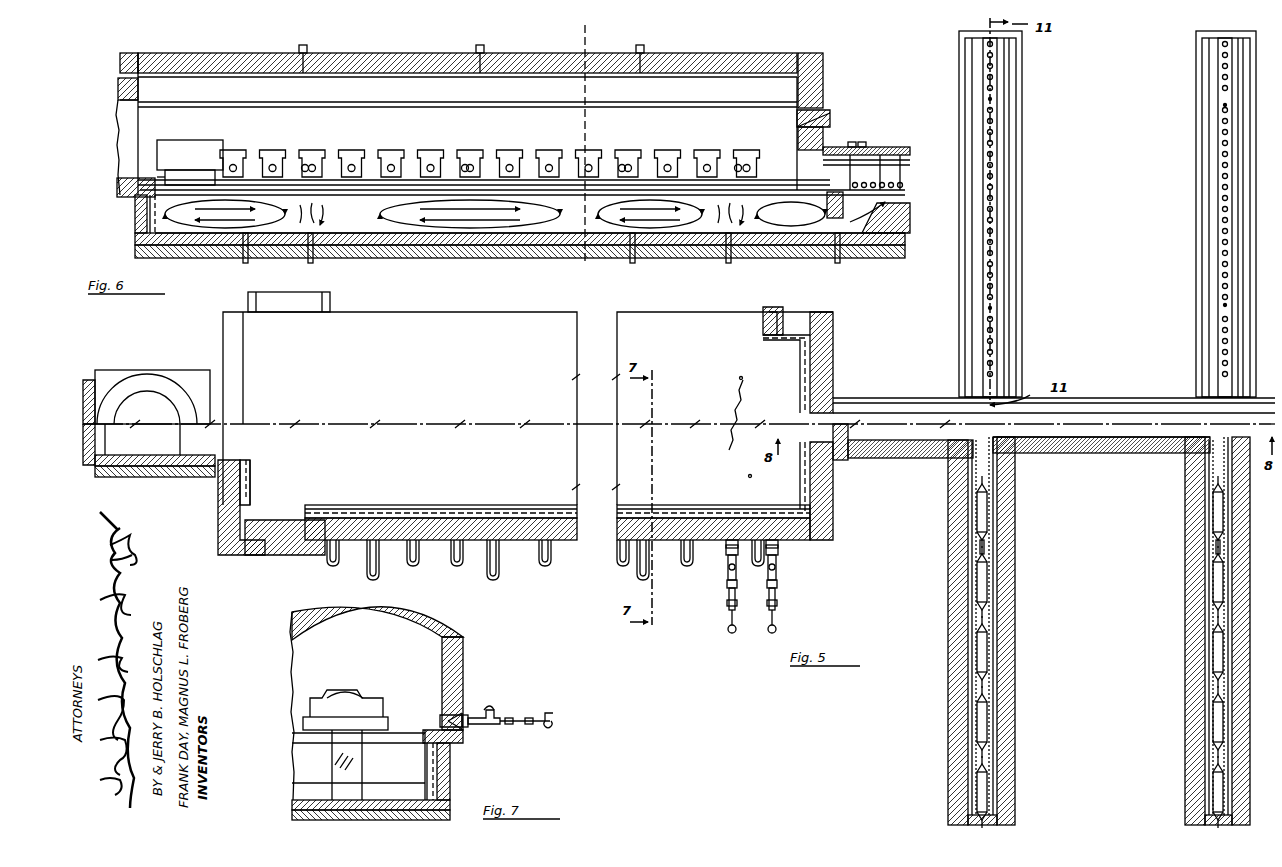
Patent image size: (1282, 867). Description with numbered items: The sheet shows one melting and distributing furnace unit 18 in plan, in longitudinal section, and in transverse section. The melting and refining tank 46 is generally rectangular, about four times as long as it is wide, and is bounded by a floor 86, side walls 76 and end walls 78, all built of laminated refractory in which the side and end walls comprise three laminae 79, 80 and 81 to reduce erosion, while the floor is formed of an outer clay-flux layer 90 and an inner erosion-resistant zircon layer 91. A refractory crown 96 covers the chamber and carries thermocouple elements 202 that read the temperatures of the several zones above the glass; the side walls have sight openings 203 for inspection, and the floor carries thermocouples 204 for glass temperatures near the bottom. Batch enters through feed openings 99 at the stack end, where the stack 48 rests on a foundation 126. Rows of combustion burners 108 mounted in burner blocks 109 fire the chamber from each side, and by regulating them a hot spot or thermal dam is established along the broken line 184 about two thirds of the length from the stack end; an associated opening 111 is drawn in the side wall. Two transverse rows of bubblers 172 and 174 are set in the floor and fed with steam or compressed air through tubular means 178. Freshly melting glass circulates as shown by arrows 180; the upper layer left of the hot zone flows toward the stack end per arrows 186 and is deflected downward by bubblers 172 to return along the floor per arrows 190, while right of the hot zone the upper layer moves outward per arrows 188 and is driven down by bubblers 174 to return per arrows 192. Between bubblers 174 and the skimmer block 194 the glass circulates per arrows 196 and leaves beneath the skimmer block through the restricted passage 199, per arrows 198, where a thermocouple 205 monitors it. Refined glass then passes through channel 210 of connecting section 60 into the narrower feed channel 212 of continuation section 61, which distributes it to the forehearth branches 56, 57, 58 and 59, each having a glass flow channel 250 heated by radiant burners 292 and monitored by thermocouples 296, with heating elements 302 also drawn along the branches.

In FIG. 6, the furnace unit 18 is at (444, 50).
In FIG. 6, the melting and refining tank 46 is at (526, 130).
In FIG. 5, the melting and refining tank 46 is at (526, 448).
In FIG. 7, the melting and refining tank 46 is at (393, 675).
In FIG. 5, the stack 48 is at (137, 387).
In FIG. 5, the forehearth section 56 is at (948, 796).
In FIG. 5, the forehearth section 57 is at (959, 54).
In FIG. 5, the forehearth section 58 is at (1185, 786).
In FIG. 5, the forehearth section 59 is at (1196, 46).
In FIG. 5, the forehearth connecting section 60 is at (907, 396).
In FIG. 5, the forehearth continuation section 61 is at (1107, 450).
In FIG. 5, the side wall 76 is at (346, 500).
In FIG. 7, the side wall 76 is at (455, 769).
In FIG. 6, the end wall 78 is at (124, 226).
In FIG. 5, the end wall 78 is at (214, 503).
In FIG. 6, the wall layer 79 is at (150, 198).
In FIG. 5, the wall layer 79 is at (253, 458).
In FIG. 7, the wall layer 79 is at (427, 757).
In FIG. 6, the wall layer 80 is at (153, 210).
In FIG. 5, the wall layer 80 is at (246, 458).
In FIG. 7, the wall layer 80 is at (441, 751).
In FIG. 6, the wall layer 81 is at (136, 234).
In FIG. 5, the wall layer 81 is at (220, 490).
In FIG. 7, the wall layer 81 is at (452, 788).
In FIG. 6, the floor 86 is at (545, 255).
In FIG. 7, the floor 86 is at (408, 796).
In FIG. 6, the outer floor layer 90 is at (511, 238).
In FIG. 7, the outer floor layer 90 is at (292, 816).
In FIG. 6, the inner floor layer 91 is at (548, 243).
In FIG. 7, the inner floor layer 91 is at (295, 800).
In FIG. 6, the crown 96 is at (768, 58).
In FIG. 7, the crown 96 is at (411, 616).
In FIG. 6, the feed opening 99 is at (157, 153).
In FIG. 5, the feed opening 99 is at (282, 295).
In FIG. 5, the combustion burner 108 is at (726, 566).
In FIG. 7, the combustion burner 108 is at (476, 710).
In FIG. 6, the burner block 109 is at (688, 165).
In FIG. 5, the burner block 109 is at (522, 543).
In FIG. 7, the burner block 109 is at (444, 721).
In FIG. 5, the burner opening 111 is at (734, 517).
In FIG. 5, the foundation 126 is at (194, 370).
In FIG. 6, the bubbler 172 is at (316, 246).
In FIG. 5, the bubbler 172 is at (409, 371).
In FIG. 6, the bubbler 174 is at (728, 240).
In FIG. 5, the bubbler 174 is at (740, 378).
In FIG. 6, the tubular means 178 is at (308, 265).
In FIG. 6, the arrows 180 is at (260, 204).
In FIG. 6, the hot zone line 184 is at (586, 28).
In FIG. 6, the arrows 186 is at (402, 197).
In FIG. 6, the arrows 188 is at (656, 201).
In FIG. 6, the arrows 190 is at (455, 217).
In FIG. 6, the arrows 192 is at (657, 223).
In FIG. 6, the skimmer block 194 is at (836, 190).
In FIG. 5, the skimmer block 194 is at (844, 454).
In FIG. 7, the skimmer block 194 is at (332, 757).
In FIG. 6, the arrows 196 is at (790, 218).
In FIG. 6, the arrows 198 is at (885, 232).
In FIG. 6, the restricted passage 199 is at (884, 186).
In FIG. 7, the restricted passage 199 is at (332, 780).
In FIG. 6, the thermocouple element 202 is at (304, 46).
In FIG. 6, the sight opening 203 is at (335, 152).
In FIG. 5, the sight opening 203 is at (387, 558).
In FIG. 6, the thermocouple 204 is at (245, 258).
In FIG. 6, the thermocouple 205 is at (837, 262).
In FIG. 5, the glass conveying channel 210 is at (950, 451).
In FIG. 5, the feed channel 212 is at (1052, 445).
In FIG. 5, the glass flow channel 250 is at (982, 540).
In FIG. 5, the radiant burner 292 is at (985, 292).
In FIG. 5, the thermocouple 296 is at (988, 99).
In FIG. 5, the heating element 302 is at (977, 510).